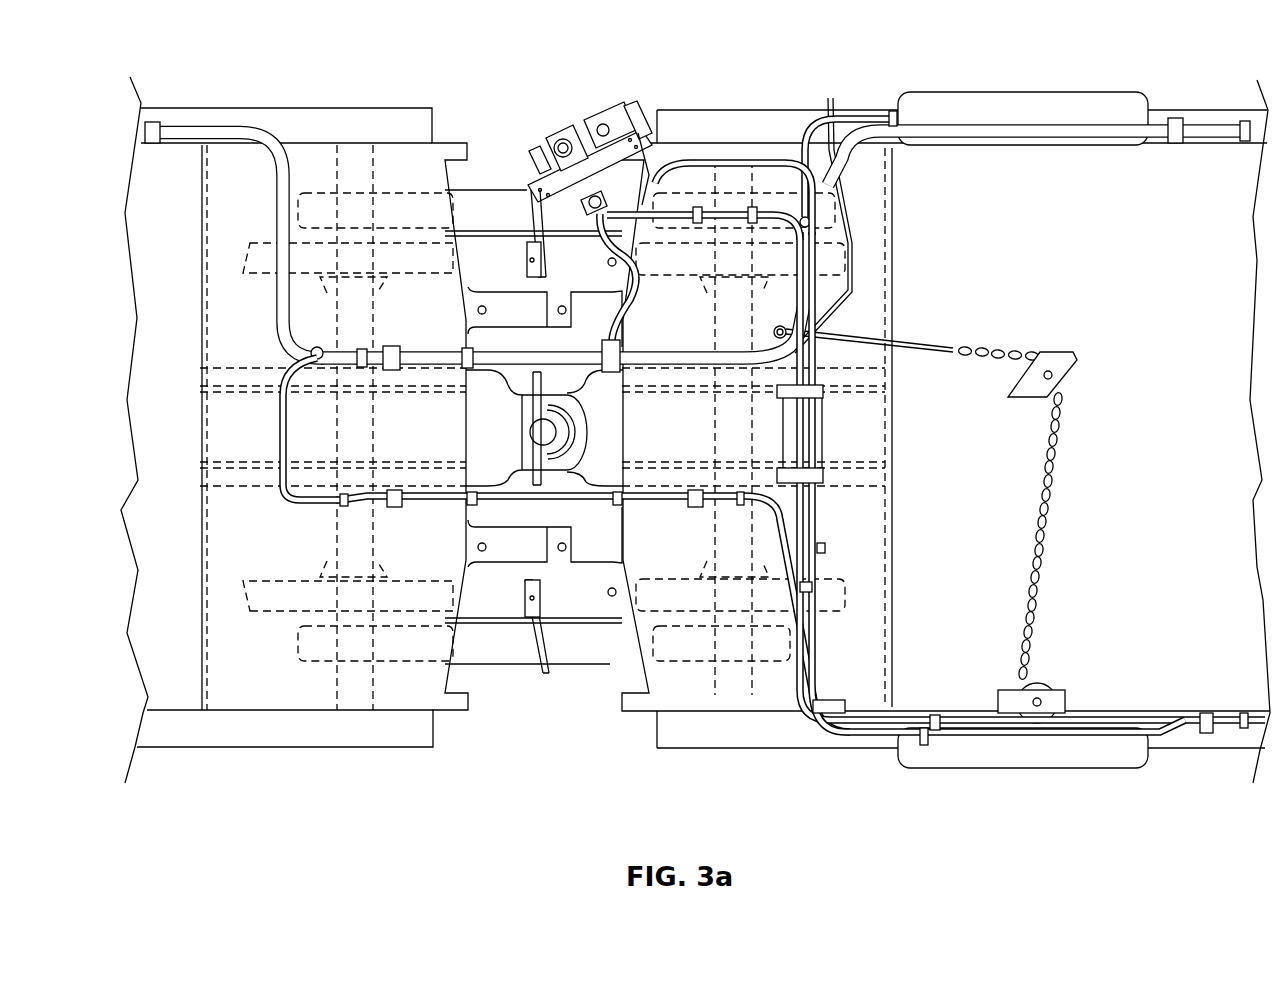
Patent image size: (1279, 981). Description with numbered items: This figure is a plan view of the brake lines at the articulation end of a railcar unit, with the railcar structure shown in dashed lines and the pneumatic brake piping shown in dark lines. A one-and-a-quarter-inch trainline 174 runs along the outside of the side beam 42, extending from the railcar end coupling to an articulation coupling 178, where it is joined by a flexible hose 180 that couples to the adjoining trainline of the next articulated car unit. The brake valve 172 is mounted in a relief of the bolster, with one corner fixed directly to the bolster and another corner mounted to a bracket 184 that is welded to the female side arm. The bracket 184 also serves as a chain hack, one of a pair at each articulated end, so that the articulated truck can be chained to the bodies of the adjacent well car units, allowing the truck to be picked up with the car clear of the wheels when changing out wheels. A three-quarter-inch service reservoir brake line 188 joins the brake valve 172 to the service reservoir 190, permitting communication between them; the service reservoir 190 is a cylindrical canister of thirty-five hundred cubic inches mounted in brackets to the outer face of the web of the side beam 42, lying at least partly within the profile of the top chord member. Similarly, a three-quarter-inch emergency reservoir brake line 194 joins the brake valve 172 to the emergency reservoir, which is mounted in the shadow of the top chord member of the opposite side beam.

The side beam 42 is at (1206, 158).
The brake valve 172 is at (561, 114).
The trainline 174 is at (226, 120).
The articulation coupling 178 is at (613, 380).
The flexible hose 180 is at (543, 340).
The bracket 184 is at (526, 224).
The service reservoir brake line 188 is at (732, 156).
The service reservoir 190 is at (903, 90).
The emergency reservoir brake line 194 is at (822, 625).